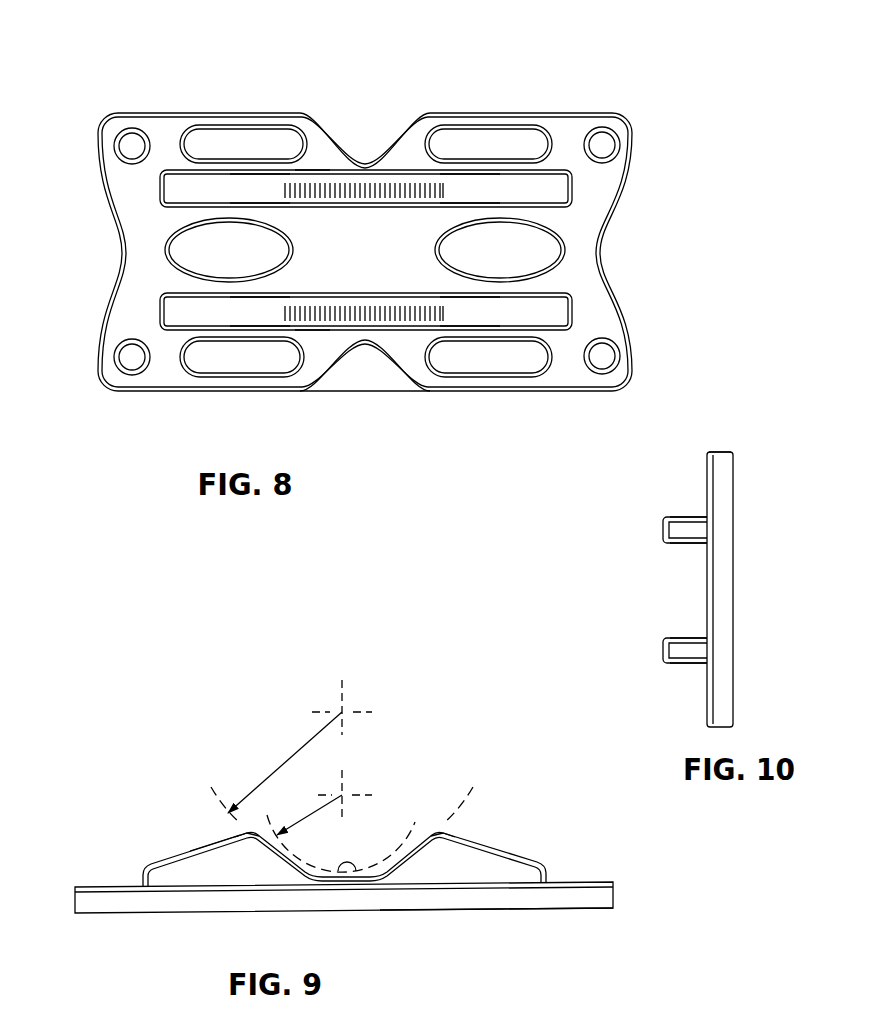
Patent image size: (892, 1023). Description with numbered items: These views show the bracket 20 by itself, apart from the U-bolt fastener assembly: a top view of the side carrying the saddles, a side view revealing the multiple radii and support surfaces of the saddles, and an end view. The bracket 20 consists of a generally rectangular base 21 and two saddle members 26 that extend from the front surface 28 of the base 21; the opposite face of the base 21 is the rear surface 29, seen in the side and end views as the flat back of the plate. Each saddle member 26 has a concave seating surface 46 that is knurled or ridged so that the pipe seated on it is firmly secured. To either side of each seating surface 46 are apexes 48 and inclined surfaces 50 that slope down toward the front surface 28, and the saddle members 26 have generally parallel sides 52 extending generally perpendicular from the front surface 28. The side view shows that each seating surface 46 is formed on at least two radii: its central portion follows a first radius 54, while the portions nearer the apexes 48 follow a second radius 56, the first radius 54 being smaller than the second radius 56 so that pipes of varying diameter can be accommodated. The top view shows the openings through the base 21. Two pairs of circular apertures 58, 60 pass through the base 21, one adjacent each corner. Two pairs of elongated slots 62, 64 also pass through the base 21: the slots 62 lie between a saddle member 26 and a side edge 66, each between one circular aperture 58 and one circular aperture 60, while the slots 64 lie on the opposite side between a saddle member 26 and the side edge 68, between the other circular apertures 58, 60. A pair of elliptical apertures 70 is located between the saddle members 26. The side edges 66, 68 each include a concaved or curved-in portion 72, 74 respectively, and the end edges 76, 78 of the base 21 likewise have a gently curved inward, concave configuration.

In FIG. 8, the bracket 20 is at (672, 176).
In FIG. 10, the bracket 20 is at (625, 573).
In FIG. 9, the bracket 20 is at (515, 847).
In FIG. 8, the base 21 is at (590, 280).
In FIG. 10, the base 21 is at (727, 713).
In FIG. 9, the base 21 is at (603, 893).
In FIG. 8, the saddle members 26 is at (545, 186).
In FIG. 10, the saddle members 26 is at (678, 517).
In FIG. 9, the saddle members 26 is at (177, 860).
In FIG. 8, the front surface 28 is at (150, 116).
In FIG. 10, the front surface 28 is at (707, 458).
In FIG. 9, the front surface 28 is at (76, 886).
In FIG. 10, the rear surface 29 is at (733, 573).
In FIG. 9, the rear surface 29 is at (588, 910).
In FIG. 8, the seating surface 46 is at (364, 188).
In FIG. 9, the seating surface 46 is at (363, 880).
In FIG. 8, the apexes 48 is at (270, 188).
In FIG. 9, the apexes 48 is at (240, 830).
In FIG. 8, the inclined surfaces 50 is at (193, 186).
In FIG. 10, the inclined surfaces 50 is at (666, 526).
In FIG. 9, the inclined surfaces 50 is at (523, 856).
In FIG. 8, the sides 52 is at (310, 170).
In FIG. 10, the sides 52 is at (693, 515).
In FIG. 9, the sides 52 is at (223, 857).
In FIG. 9, the first radius 54 is at (341, 816).
In FIG. 9, the second radius 56 is at (342, 752).
In FIG. 8, the circular apertures 58 is at (125, 143).
In FIG. 8, the circular apertures 60 is at (606, 140).
In FIG. 8, the elongated slots 62 is at (215, 140).
In FIG. 8, the elongated slots 64 is at (222, 362).
In FIG. 8, the side edge 66 is at (587, 113).
In FIG. 8, the side edge 68 is at (588, 390).
In FIG. 9, the side edge 68 is at (455, 898).
In FIG. 8, the elliptical apertures 70 is at (190, 255).
In FIG. 8, the concaved portion 72 is at (412, 122).
In FIG. 8, the concaved portion 74 is at (405, 366).
In FIG. 8, the end edge 76 is at (124, 230).
In FIG. 8, the end edge 78 is at (602, 243).